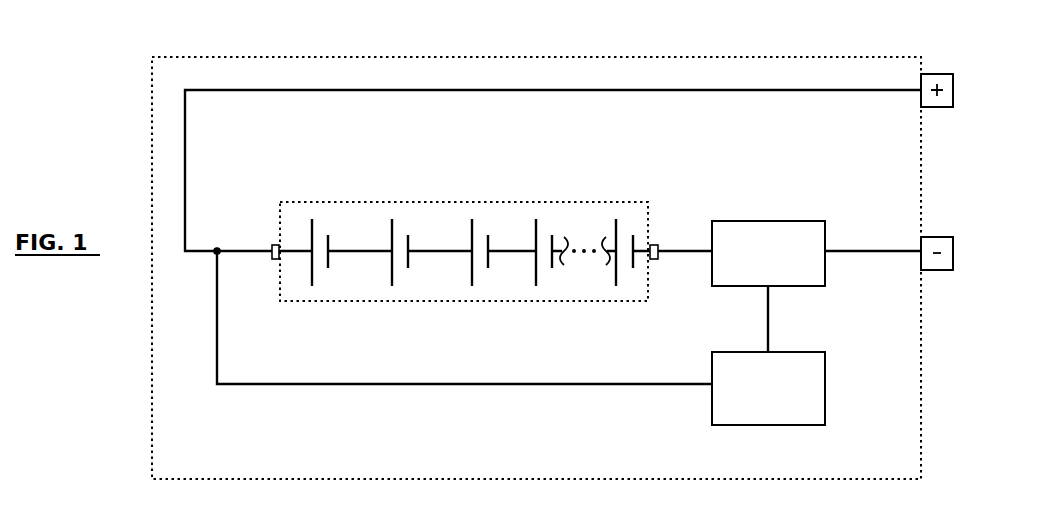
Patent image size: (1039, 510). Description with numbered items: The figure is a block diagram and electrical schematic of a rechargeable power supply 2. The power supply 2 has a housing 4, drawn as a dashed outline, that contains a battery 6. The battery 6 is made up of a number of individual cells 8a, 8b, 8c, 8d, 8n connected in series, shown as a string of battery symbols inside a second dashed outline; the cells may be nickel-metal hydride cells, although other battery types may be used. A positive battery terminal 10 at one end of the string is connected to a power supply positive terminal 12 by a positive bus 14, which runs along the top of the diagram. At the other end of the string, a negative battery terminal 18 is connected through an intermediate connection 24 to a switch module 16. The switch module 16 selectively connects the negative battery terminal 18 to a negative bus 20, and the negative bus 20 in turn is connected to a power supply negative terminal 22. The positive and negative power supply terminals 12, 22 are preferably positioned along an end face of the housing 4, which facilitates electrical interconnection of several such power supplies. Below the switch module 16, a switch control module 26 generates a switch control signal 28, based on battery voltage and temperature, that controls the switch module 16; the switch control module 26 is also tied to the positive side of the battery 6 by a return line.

The rechargeable power supply 2 is at (100, 46).
The housing 4 is at (152, 89).
The battery 6 is at (380, 202).
The cell 8a is at (312, 270).
The cell 8b is at (392, 270).
The cell 8c is at (472, 270).
The cell 8d is at (536, 270).
The cell 8n is at (616, 270).
The positive battery terminal 10 is at (272, 247).
The power supply positive terminal 12 is at (937, 74).
The positive bus 14 is at (692, 90).
The switch module 16 is at (776, 221).
The negative battery terminal 18 is at (656, 248).
The negative bus 20 is at (900, 251).
The power supply negative terminal 22 is at (937, 237).
The intermediate connection 24 is at (697, 252).
The switch control module 26 is at (825, 384).
The switch control signal 28 is at (768, 303).